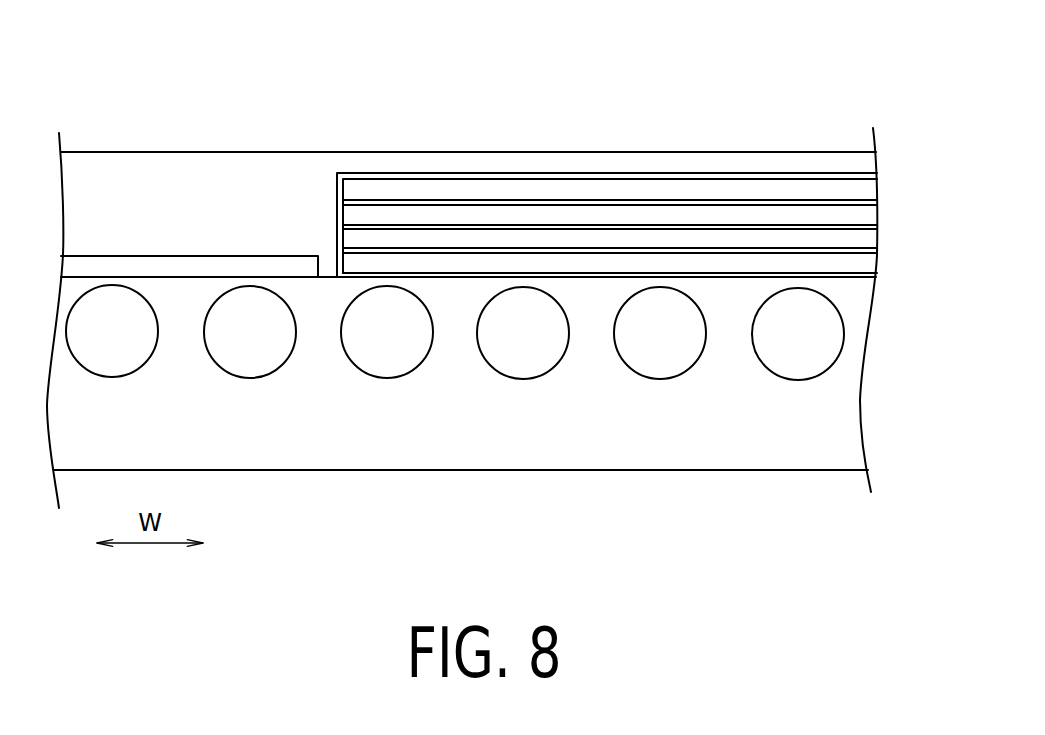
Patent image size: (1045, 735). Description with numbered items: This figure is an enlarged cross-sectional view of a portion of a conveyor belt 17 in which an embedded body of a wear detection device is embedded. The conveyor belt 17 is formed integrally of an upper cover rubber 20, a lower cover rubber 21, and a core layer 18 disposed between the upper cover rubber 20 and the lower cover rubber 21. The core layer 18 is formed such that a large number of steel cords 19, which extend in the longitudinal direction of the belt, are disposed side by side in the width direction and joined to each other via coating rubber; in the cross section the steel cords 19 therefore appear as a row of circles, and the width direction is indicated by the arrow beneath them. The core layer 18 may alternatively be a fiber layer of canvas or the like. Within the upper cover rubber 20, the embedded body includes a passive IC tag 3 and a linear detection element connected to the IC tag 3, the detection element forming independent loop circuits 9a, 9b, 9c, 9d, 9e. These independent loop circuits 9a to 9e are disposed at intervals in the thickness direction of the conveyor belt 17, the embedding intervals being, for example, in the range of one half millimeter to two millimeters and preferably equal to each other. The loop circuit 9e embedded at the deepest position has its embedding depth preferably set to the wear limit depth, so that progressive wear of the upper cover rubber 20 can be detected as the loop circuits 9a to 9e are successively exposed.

The passive IC tag 3 is at (174, 257).
The independent loop circuit 9a is at (448, 173).
The independent loop circuit 9b is at (517, 200).
The independent loop circuit 9c is at (585, 224).
The independent loop circuit 9d is at (653, 248).
The independent loop circuit 9e is at (722, 274).
The conveyor belt 17 is at (383, 150).
The core layer 18 is at (847, 360).
The steel cords 19 is at (263, 366).
The upper cover rubber 20 is at (248, 166).
The lower cover rubber 21 is at (467, 461).